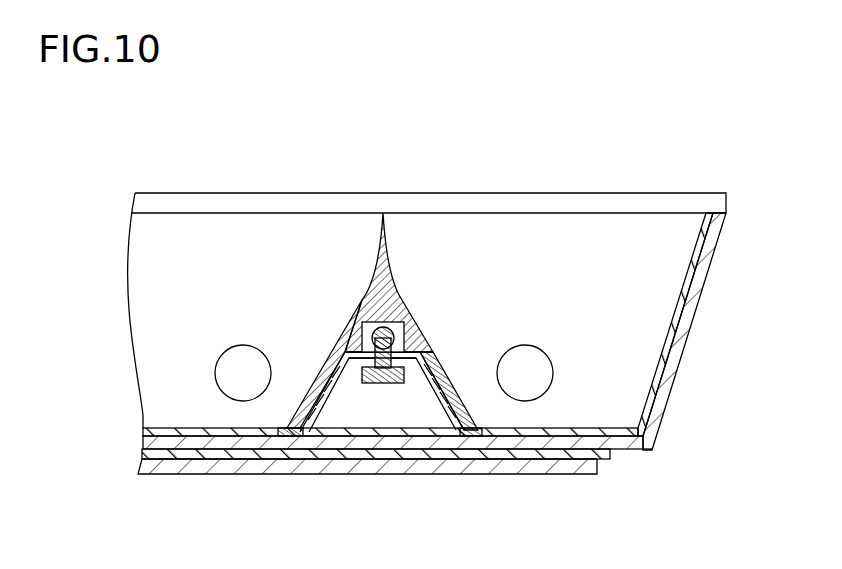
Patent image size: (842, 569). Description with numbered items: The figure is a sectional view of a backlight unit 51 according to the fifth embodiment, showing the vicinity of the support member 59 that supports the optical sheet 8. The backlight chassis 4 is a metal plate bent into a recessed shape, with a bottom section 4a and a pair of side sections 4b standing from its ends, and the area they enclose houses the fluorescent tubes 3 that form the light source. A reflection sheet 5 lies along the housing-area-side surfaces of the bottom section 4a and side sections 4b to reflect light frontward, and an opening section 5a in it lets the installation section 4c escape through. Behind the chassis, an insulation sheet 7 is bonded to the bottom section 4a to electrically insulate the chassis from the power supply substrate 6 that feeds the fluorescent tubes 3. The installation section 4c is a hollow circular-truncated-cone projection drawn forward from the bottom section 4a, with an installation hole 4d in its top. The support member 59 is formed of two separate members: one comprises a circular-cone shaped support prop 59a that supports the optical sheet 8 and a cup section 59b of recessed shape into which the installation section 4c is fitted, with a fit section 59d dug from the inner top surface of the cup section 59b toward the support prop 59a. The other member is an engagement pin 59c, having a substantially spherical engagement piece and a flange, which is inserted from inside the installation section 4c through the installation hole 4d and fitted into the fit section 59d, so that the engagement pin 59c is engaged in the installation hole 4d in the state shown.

The backlight unit 51 is at (695, 164).
The optical sheet 8 is at (728, 204).
The reflection sheet 5 is at (690, 300).
The opening section 5a is at (285, 437).
The backlight chassis 4 is at (684, 356).
The bottom section 4a is at (617, 452).
The side section 4b is at (672, 386).
The installation section 4c is at (433, 430).
The installation hole 4d is at (356, 340).
The fluorescent tube 3 is at (240, 346).
The power supply substrate 6 is at (512, 460).
The insulation sheet 7 is at (552, 456).
The support member 59 is at (358, 268).
The support prop 59a is at (397, 246).
The cup section 59b is at (457, 386).
The engagement pin 59c is at (374, 384).
The fit section 59d is at (398, 308).